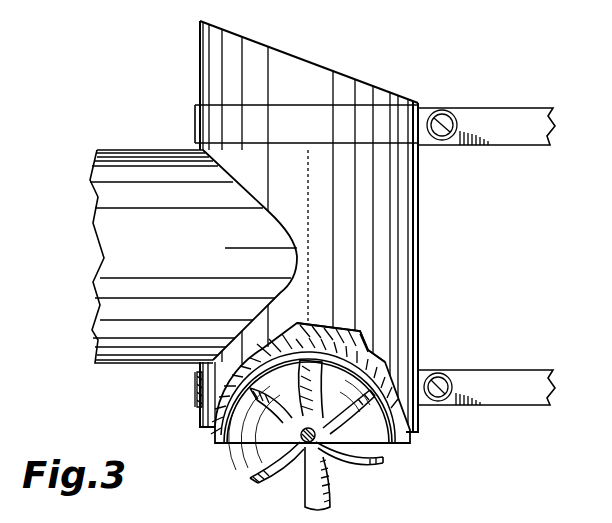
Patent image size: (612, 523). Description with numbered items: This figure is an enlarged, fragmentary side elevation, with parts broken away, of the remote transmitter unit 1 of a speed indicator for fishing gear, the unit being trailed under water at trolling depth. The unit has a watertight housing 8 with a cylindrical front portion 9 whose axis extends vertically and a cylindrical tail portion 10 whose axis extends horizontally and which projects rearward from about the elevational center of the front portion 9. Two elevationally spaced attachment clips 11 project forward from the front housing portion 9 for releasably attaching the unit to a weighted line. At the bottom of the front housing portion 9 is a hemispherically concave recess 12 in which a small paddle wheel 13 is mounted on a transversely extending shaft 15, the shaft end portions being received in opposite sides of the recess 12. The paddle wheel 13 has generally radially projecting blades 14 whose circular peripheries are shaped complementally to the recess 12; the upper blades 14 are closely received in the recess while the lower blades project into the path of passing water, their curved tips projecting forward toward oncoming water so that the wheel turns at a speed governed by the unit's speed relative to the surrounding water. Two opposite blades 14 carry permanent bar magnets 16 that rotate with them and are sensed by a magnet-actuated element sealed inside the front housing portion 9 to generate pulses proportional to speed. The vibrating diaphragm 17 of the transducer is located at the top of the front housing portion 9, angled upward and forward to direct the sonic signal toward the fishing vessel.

The remote transmitter unit 1 is at (440, 90).
The watertight housing 8 is at (158, 148).
The cylindrical front portion 9 is at (412, 243).
The cylindrical tail portion 10 is at (118, 352).
The attachment clips 11 is at (513, 134).
The hemispherically concave recess 12 is at (391, 445).
The paddle wheel 13 is at (292, 452).
The blades 14 is at (363, 462).
The shaft 15 is at (291, 440).
The permanent bar magnets 16 is at (315, 323).
The vibrating diaphragm 17 is at (318, 65).